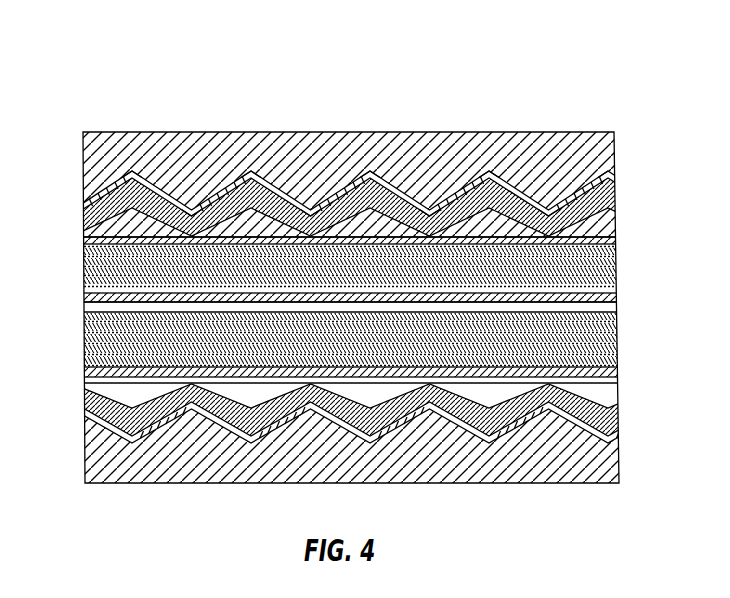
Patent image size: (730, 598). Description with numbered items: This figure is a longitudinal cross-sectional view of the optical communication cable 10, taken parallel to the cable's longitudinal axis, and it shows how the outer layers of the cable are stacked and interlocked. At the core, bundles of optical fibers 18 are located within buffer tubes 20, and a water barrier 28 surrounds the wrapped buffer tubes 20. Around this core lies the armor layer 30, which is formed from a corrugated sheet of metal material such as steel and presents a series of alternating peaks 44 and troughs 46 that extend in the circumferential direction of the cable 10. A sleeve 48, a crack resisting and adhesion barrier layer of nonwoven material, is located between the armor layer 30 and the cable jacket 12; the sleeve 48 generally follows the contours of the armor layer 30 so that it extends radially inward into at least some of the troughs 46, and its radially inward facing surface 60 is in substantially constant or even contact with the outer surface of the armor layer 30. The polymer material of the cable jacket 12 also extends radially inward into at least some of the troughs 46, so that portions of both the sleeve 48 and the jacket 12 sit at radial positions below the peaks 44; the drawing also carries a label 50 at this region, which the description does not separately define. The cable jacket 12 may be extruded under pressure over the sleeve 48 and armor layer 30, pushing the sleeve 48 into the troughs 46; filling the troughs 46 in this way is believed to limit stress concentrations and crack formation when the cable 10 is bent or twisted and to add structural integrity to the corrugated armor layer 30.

The cable 10 is at (614, 76).
The cable jacket 12 is at (597, 152).
The optical fibers 18 is at (616, 283).
The buffer tubes 20 is at (603, 243).
The water barrier 28 is at (90, 240).
The armor layer 30 is at (598, 200).
The peaks 44 is at (130, 188).
The troughs 46 is at (192, 204).
The sleeve 48 is at (603, 176).
The textured surface 50 is at (103, 178).
The radially inward facing surface 60 is at (347, 299).